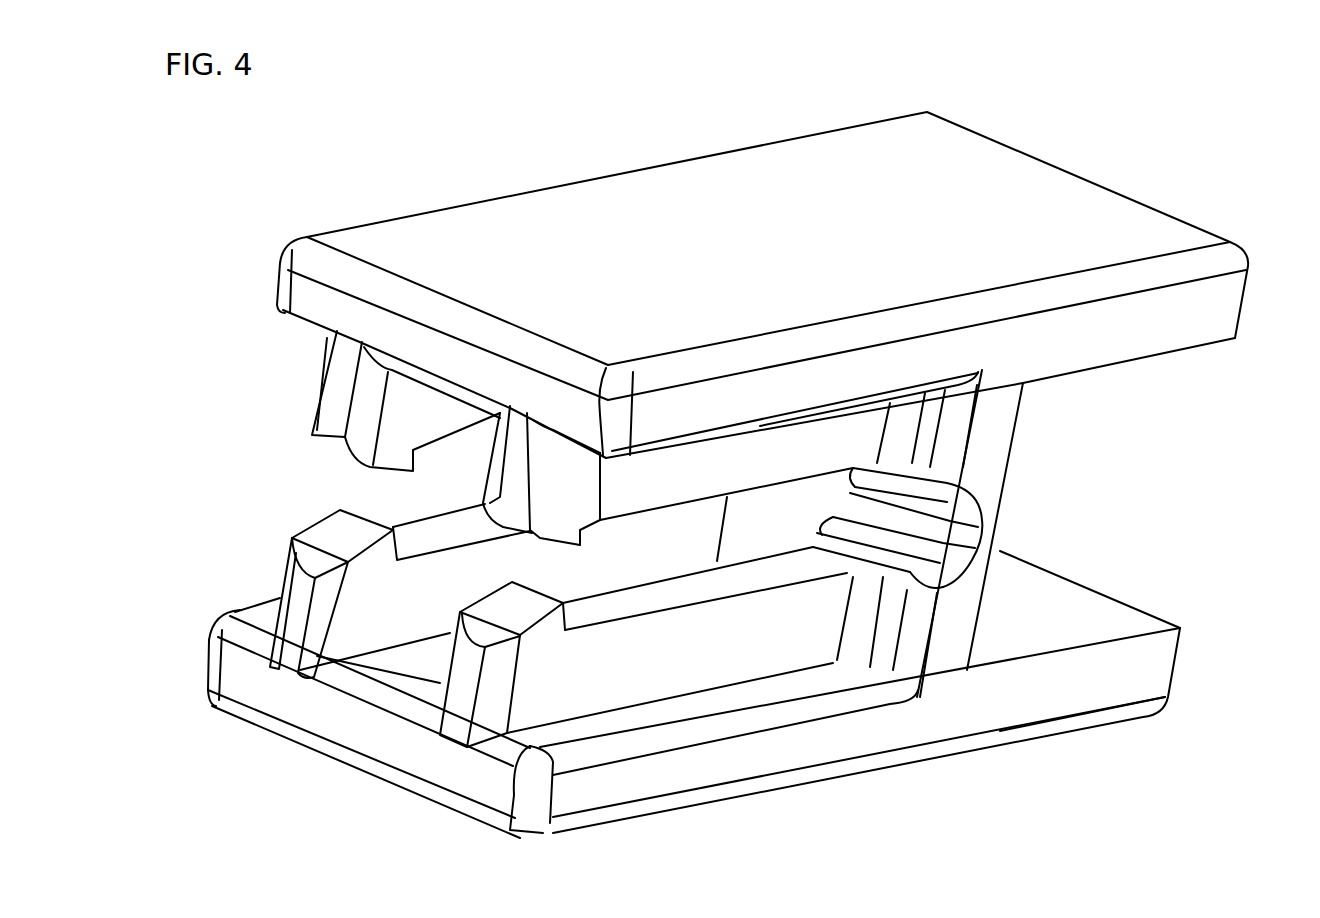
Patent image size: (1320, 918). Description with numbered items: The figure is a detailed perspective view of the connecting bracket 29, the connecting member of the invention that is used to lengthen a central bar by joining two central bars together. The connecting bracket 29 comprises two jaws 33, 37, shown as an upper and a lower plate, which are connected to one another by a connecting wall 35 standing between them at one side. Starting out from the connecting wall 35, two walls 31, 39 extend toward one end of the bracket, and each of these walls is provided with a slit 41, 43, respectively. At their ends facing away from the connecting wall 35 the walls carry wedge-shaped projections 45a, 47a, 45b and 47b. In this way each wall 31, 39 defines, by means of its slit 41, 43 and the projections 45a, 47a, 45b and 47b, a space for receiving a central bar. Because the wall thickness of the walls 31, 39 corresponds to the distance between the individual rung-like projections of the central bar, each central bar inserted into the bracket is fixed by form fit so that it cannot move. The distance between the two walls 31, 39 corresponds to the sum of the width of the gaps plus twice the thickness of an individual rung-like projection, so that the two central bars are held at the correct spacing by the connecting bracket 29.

The connecting bracket 29 is at (1318, 842).
The wall 31 is at (620, 670).
The jaw 33 is at (1077, 687).
The connecting wall 35 is at (982, 462).
The jaw 37 is at (1113, 323).
The wall 39 is at (397, 602).
The slit 41 is at (637, 597).
The slit 43 is at (447, 530).
The wedge-shaped projection 45a is at (508, 612).
The wedge-shaped projection 45b is at (567, 530).
The wedge-shaped projection 47a is at (340, 537).
The wedge-shaped projection 47b is at (390, 447).